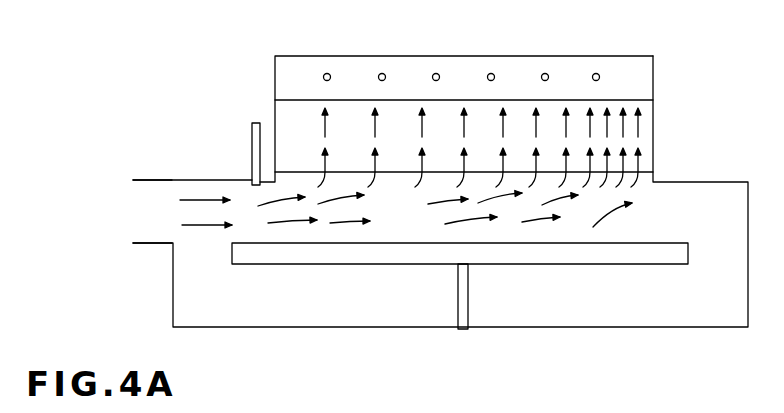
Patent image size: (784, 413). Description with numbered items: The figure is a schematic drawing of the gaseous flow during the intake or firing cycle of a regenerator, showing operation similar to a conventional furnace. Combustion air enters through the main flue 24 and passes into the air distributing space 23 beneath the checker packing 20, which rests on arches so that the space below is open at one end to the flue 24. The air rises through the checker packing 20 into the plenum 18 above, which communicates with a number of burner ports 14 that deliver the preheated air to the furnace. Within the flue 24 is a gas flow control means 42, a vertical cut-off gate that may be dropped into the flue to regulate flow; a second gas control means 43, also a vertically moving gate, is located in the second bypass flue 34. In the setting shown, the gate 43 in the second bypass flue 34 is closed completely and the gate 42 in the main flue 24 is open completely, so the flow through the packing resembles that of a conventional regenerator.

The burner ports 14 is at (594, 74).
The plenum 18 is at (476, 88).
The checker packing 20 is at (461, 144).
The air distributing space 23 is at (411, 215).
The flue 24 is at (159, 218).
The second bypass flue 34 is at (407, 303).
The gas flow control means 42 is at (252, 131).
The gas control means 43 is at (463, 330).